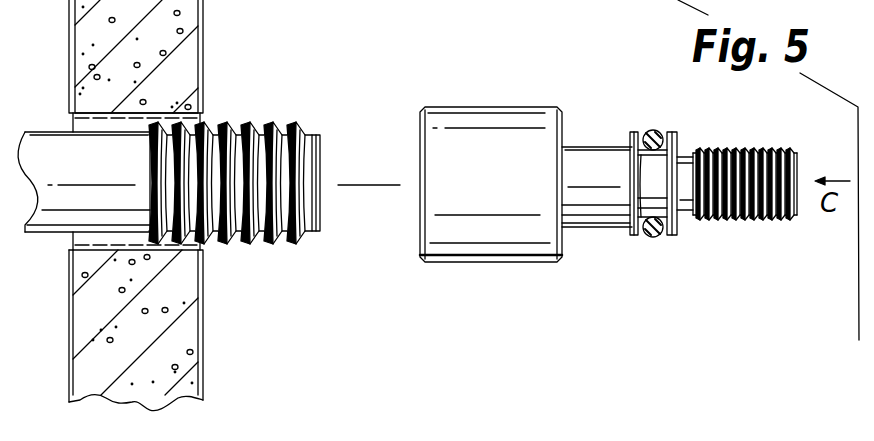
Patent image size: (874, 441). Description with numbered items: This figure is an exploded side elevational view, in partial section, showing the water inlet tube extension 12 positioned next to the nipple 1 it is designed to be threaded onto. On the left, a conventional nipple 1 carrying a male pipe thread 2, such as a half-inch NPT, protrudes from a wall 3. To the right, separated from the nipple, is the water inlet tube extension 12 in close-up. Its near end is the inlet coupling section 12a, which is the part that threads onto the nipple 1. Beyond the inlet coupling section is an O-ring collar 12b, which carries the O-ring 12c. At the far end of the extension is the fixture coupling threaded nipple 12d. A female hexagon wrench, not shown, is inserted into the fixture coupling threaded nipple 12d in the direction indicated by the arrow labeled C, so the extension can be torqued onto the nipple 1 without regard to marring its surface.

The nipple 1 is at (47, 152).
The male pipe thread 2 is at (261, 125).
The wall 3 is at (205, 328).
The water inlet tube extension 12 is at (541, 83).
The inlet coupling section 12a is at (480, 262).
The O-ring collar 12b is at (651, 265).
The O-ring 12c is at (650, 130).
The fixture coupling threaded nipple 12d is at (741, 220).